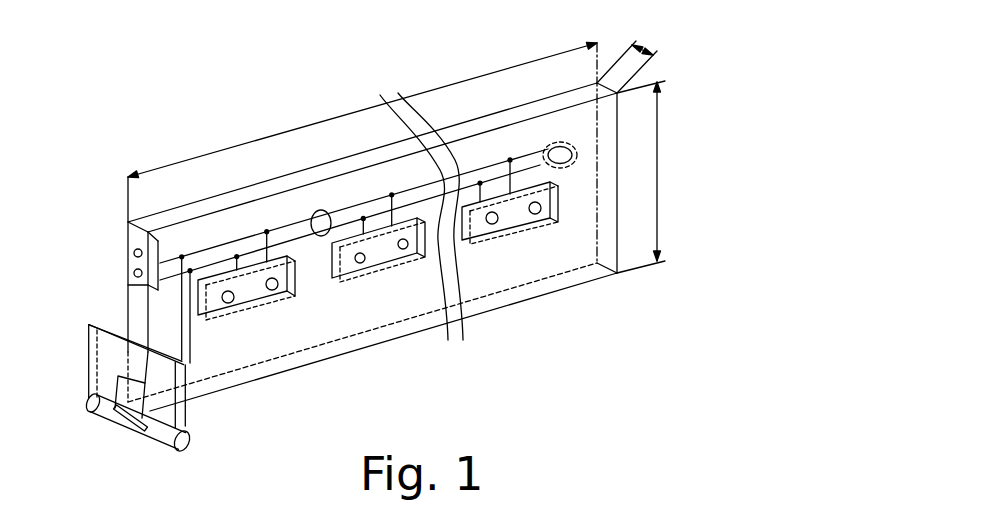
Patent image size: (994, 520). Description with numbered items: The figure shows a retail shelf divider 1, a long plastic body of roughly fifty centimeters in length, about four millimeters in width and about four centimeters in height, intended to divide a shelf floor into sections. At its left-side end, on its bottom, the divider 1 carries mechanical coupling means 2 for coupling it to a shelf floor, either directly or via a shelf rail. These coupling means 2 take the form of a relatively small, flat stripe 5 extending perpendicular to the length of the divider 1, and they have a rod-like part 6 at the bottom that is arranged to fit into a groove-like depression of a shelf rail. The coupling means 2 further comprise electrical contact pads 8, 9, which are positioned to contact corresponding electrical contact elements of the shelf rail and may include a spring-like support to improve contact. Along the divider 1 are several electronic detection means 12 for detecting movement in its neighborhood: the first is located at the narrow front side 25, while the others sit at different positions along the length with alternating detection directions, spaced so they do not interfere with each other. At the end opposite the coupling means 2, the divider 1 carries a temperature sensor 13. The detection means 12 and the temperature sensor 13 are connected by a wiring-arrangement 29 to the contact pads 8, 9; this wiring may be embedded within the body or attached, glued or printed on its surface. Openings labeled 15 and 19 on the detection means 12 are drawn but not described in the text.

The retail shelf divider 1 is at (646, 52).
The mechanical coupling means 2 is at (84, 322).
The flat stripe 5 is at (188, 414).
The rod-like part 6 is at (190, 447).
The electrical contact pad 8 is at (96, 410).
The electrical contact pad 9 is at (157, 432).
The electronic detection means 12 is at (127, 224).
The temperature sensor 13 is at (566, 168).
The first hole 15 is at (133, 251).
The second hole 19 is at (133, 273).
The front side 25 is at (133, 306).
The wiring-arrangement 29 is at (321, 210).